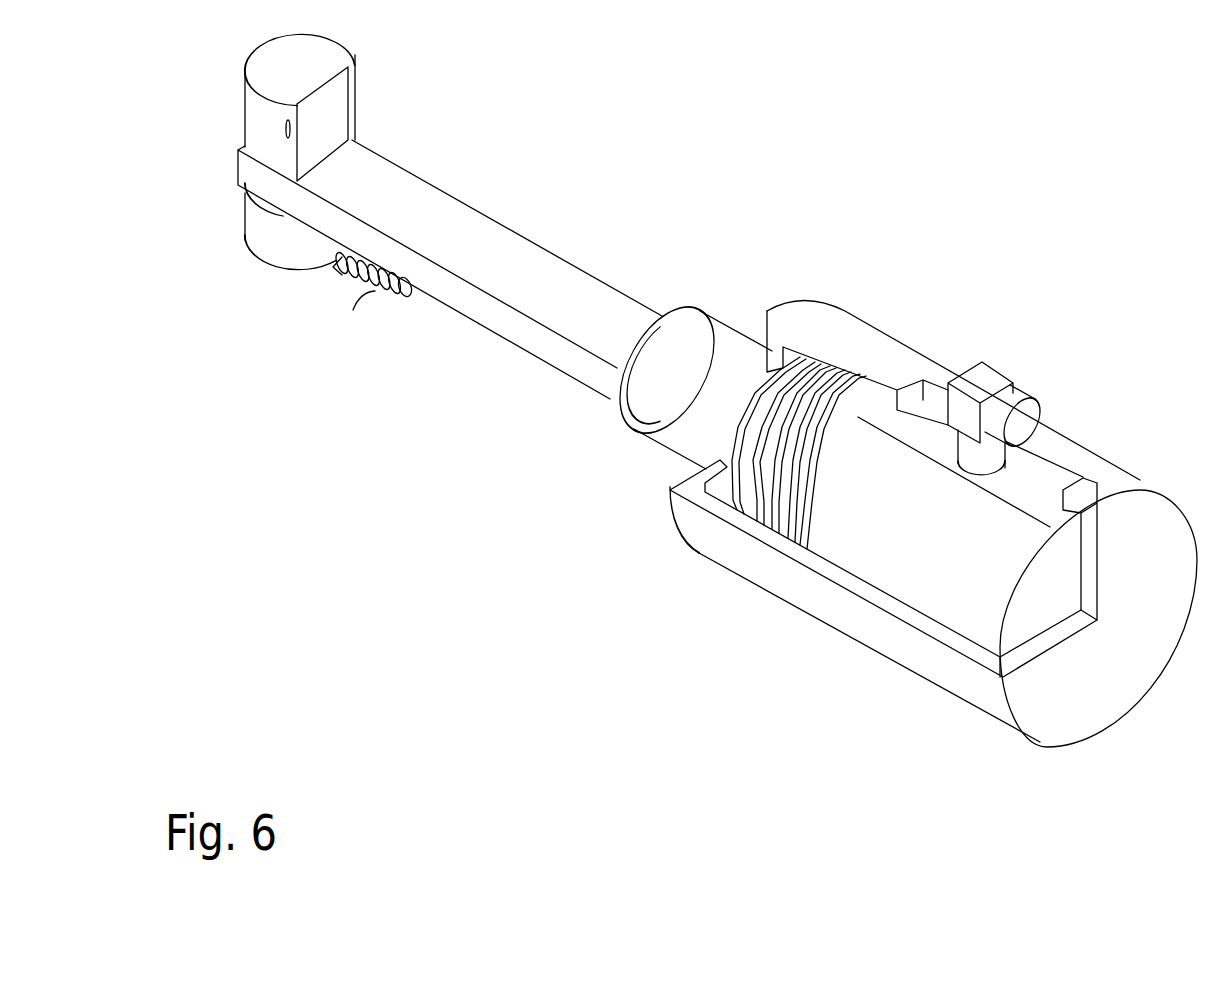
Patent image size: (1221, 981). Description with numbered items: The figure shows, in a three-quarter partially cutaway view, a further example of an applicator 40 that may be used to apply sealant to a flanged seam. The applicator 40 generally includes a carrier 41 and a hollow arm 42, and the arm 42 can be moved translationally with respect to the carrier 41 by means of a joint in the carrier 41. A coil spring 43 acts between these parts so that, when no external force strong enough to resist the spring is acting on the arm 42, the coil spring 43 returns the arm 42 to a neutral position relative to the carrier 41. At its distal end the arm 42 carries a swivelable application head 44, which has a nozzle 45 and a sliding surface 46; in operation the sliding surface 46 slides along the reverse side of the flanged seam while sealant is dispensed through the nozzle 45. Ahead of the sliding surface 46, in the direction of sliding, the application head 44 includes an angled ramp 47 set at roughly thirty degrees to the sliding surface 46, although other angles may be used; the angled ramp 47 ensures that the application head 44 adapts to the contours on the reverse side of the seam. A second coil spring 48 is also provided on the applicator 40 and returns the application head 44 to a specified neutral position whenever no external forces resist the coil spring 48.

The applicator 40 is at (385, 490).
The carrier 41 is at (843, 628).
The hollow arm 42 is at (515, 258).
The coil spring 43 is at (867, 392).
The application head 44 is at (228, 107).
The nozzle 45 is at (287, 128).
The sliding surface 46 is at (315, 112).
The angled ramp 47 is at (348, 92).
The coil spring 48 is at (373, 290).